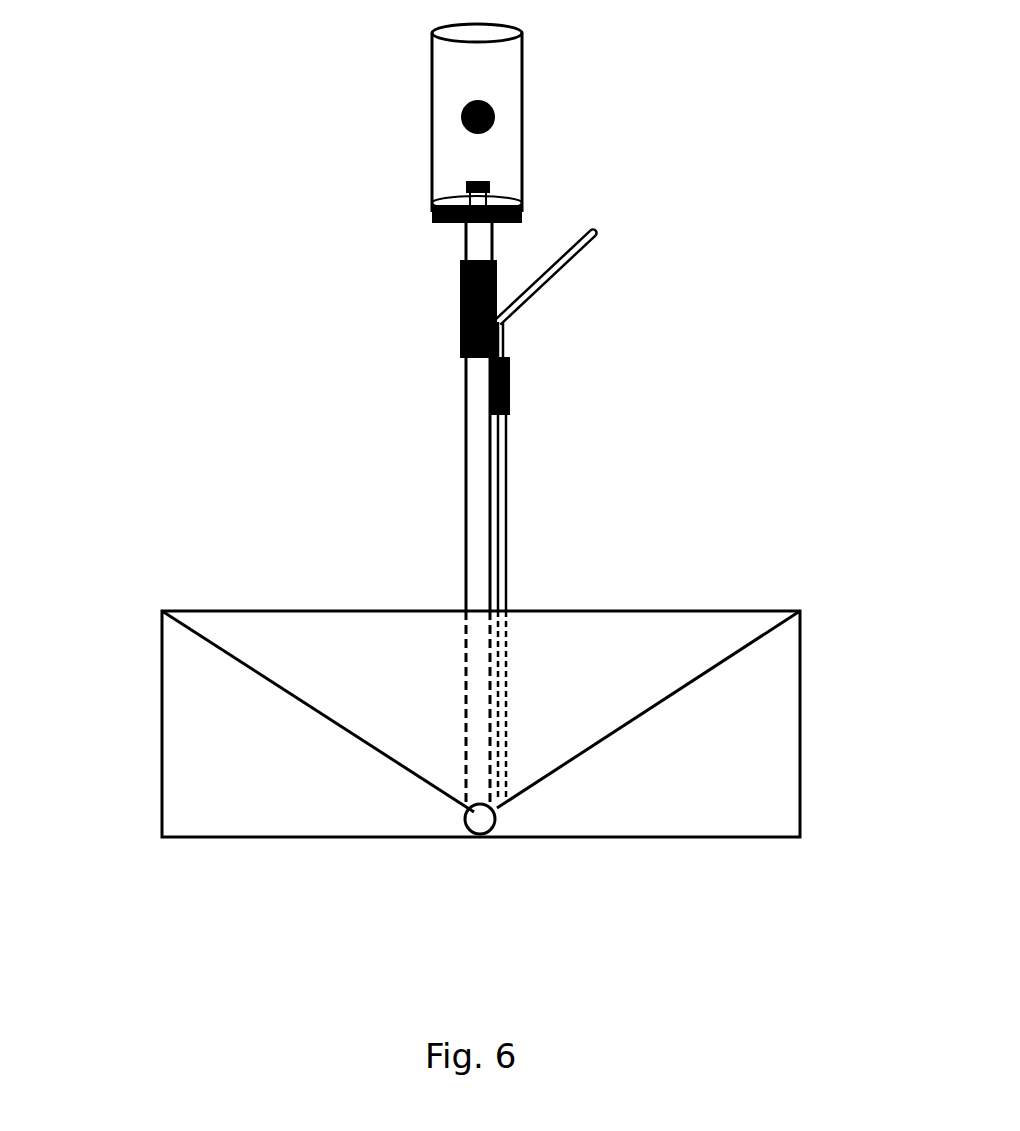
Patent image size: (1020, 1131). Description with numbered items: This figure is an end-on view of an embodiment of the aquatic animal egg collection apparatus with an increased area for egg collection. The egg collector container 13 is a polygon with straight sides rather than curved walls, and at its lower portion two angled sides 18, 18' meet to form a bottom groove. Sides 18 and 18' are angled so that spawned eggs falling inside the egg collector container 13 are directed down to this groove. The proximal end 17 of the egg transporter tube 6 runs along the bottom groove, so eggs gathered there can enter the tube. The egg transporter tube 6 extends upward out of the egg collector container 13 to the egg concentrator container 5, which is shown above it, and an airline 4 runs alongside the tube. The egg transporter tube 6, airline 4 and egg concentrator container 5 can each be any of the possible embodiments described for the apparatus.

The egg concentrator container 5 is at (560, 125).
The egg transporter tube 6 is at (420, 437).
The airline 4 is at (540, 492).
The egg collector container 13 is at (243, 582).
The side 18 is at (255, 711).
The side 18' is at (718, 709).
The proximal end 17 is at (518, 857).